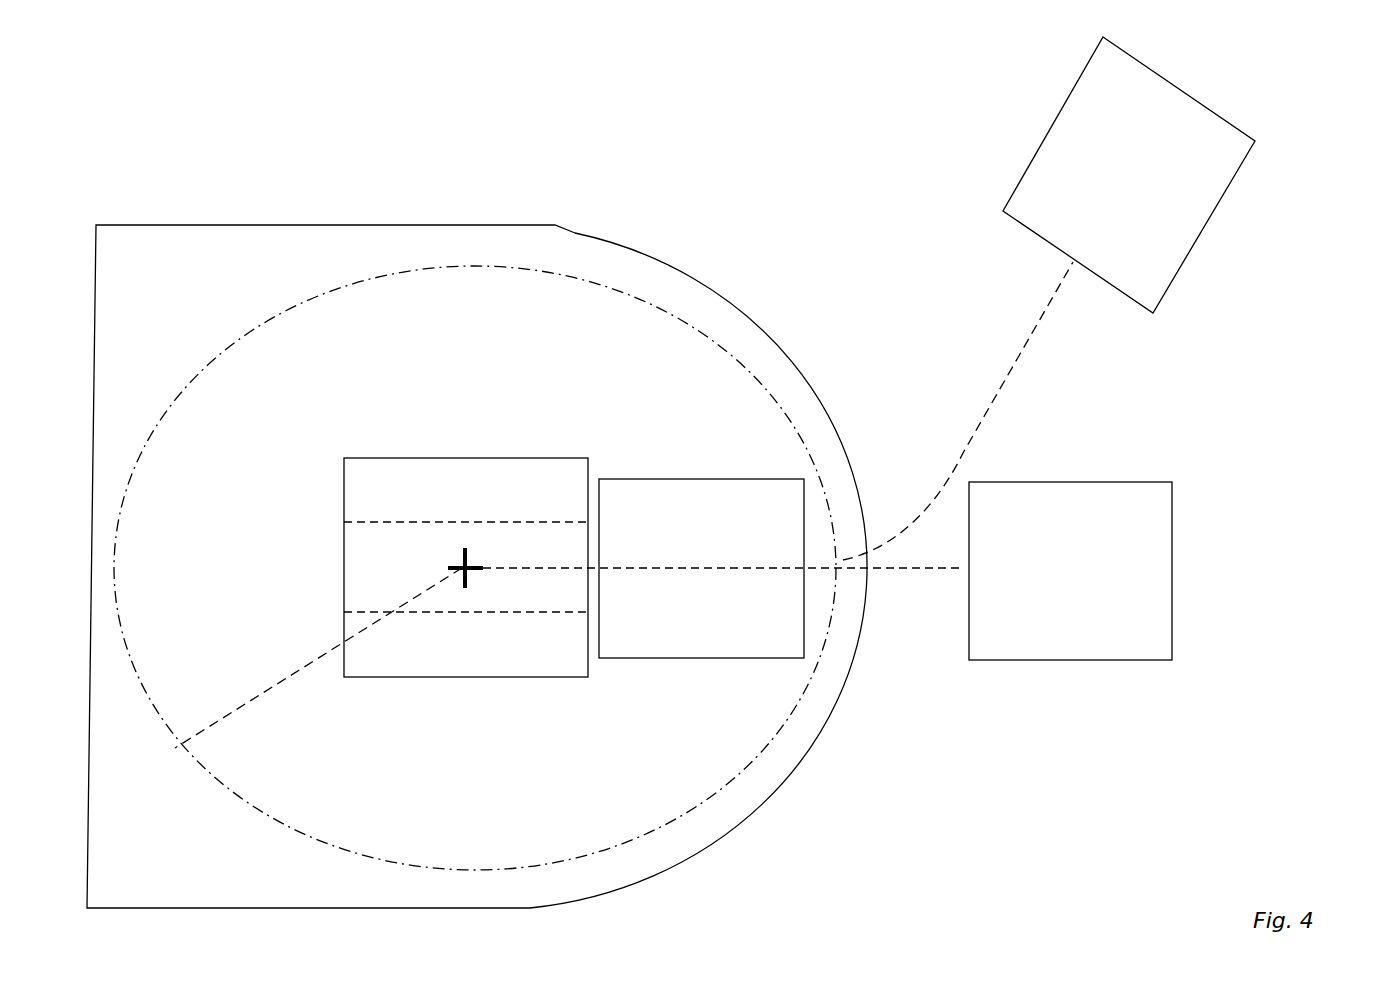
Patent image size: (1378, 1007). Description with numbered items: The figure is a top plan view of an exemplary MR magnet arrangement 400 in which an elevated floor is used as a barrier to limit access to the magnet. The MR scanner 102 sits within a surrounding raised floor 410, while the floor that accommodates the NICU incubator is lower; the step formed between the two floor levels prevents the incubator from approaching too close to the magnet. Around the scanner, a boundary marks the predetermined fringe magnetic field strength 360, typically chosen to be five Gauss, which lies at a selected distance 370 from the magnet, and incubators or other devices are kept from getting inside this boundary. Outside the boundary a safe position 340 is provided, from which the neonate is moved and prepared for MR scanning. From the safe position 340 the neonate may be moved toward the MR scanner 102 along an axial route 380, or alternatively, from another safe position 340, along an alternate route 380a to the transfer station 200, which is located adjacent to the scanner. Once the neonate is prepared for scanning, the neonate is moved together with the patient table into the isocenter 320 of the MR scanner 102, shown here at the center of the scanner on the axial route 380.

The system 400 is at (759, 97).
The raised floor 410 is at (733, 310).
The predetermined fringe magnetic field strength 360 is at (322, 838).
The MR scanner 102 is at (487, 458).
The isocenter 320 is at (462, 565).
The transfer station 200 is at (783, 476).
The selected distance 370 is at (257, 697).
The axial route 380 is at (883, 568).
The alternate route 380a is at (1025, 350).
The safe position 340 is at (1240, 128).